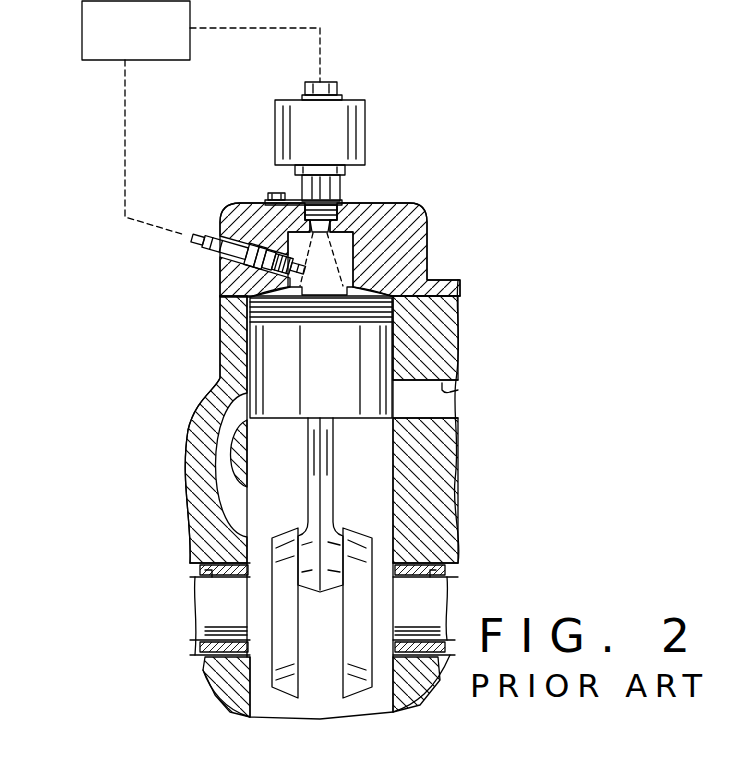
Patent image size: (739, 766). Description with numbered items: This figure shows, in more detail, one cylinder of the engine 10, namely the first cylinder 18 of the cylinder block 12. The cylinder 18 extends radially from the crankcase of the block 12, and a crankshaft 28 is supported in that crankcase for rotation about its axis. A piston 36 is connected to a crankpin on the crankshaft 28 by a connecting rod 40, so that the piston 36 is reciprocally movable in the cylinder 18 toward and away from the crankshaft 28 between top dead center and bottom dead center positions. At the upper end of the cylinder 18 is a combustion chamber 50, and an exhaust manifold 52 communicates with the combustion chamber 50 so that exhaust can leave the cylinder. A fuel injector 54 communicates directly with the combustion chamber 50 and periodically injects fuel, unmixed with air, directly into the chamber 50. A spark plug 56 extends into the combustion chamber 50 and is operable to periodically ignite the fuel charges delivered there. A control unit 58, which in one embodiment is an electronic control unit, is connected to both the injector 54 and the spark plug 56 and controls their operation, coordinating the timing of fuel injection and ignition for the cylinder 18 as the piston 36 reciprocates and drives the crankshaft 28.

The engine 10 is at (458, 223).
The cylinder block 12 is at (423, 512).
The first cylinder 18 is at (398, 446).
The crankshaft 28 is at (217, 604).
The piston 36 is at (338, 394).
The connecting rod 40 is at (328, 467).
The combustion chamber 50 is at (372, 204).
The exhaust manifold 52 is at (462, 392).
The fuel injector 54 is at (345, 130).
The spark plug 56 is at (230, 250).
The control unit 58 is at (82, 45).